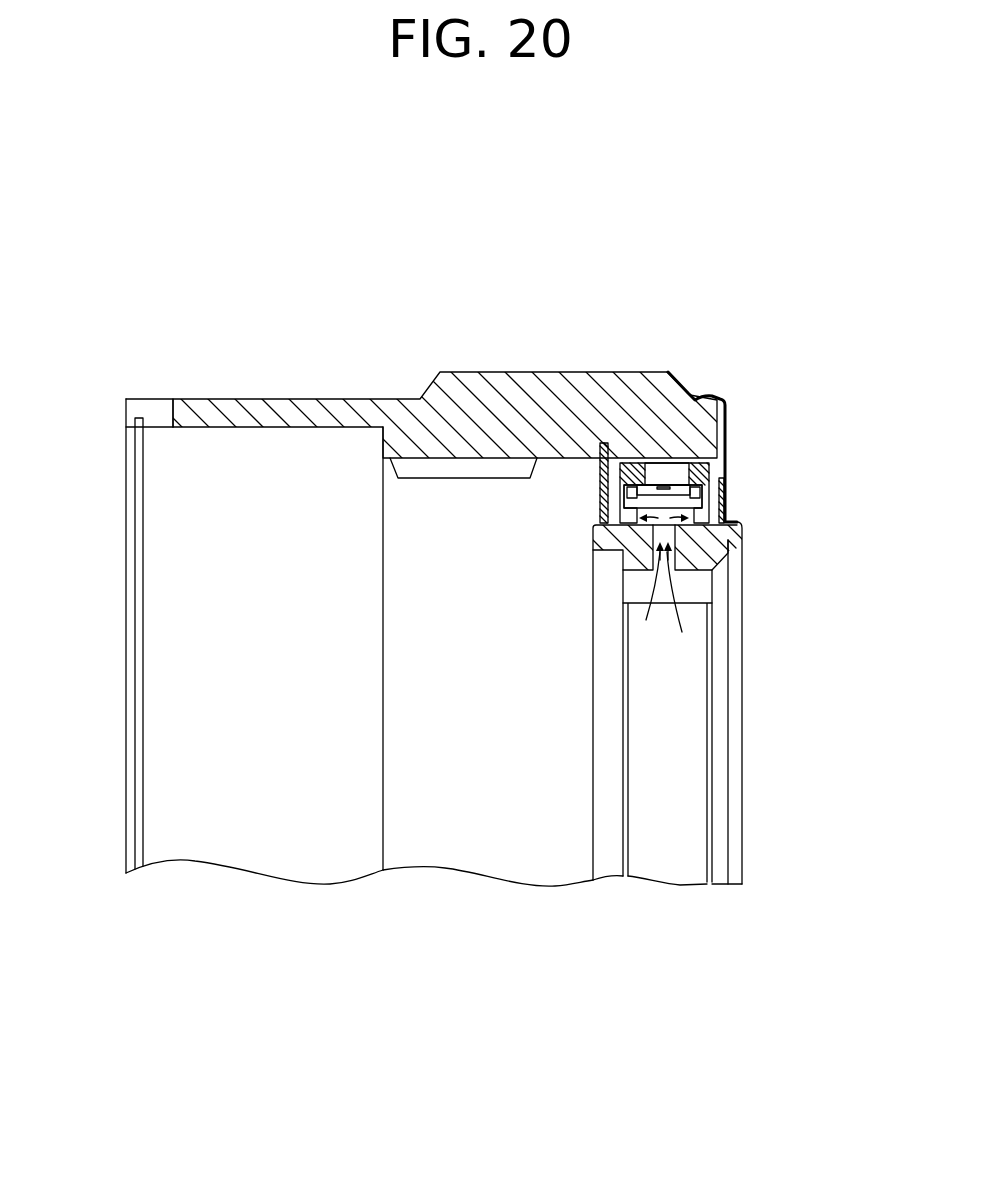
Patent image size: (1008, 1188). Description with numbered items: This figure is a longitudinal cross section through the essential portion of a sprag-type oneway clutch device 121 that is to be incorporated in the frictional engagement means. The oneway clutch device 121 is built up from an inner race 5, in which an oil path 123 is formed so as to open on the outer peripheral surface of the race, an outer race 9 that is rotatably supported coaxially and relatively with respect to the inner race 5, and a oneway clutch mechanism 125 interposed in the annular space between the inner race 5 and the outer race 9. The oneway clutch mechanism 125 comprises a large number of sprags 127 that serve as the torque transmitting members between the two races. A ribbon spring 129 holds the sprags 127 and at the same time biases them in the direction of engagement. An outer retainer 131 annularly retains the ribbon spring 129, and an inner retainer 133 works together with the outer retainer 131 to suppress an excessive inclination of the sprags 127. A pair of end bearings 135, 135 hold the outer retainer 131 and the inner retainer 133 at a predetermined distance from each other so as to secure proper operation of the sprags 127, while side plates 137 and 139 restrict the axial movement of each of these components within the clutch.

The inner race 5 is at (712, 553).
The outer race 9 is at (624, 408).
The oneway clutch device 121 is at (160, 354).
The oil path 123 is at (672, 607).
The oneway clutch mechanism 125 is at (782, 466).
The sprags 127 is at (703, 480).
The ribbon spring 129 is at (630, 497).
The outer retainer 131 is at (666, 462).
The inner retainer 133 is at (712, 503).
The end bearings 135 is at (703, 513).
The side plate 137 is at (733, 420).
The side plate 139 is at (605, 486).